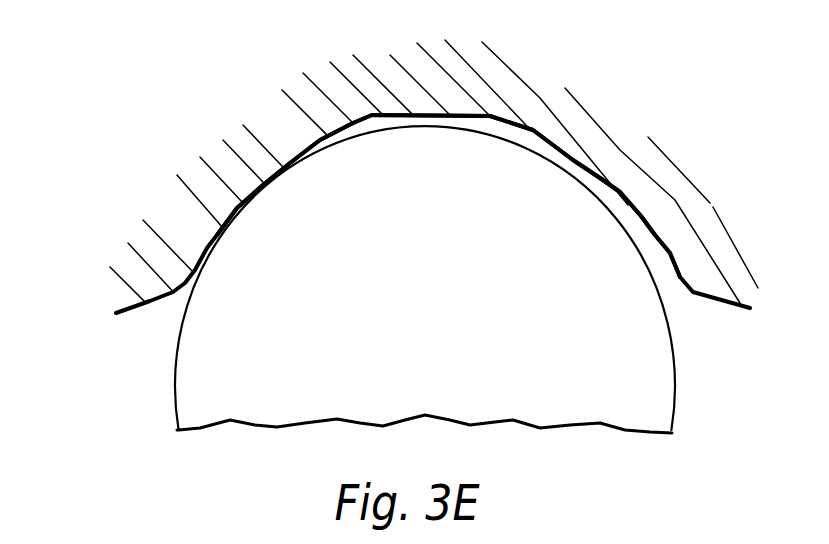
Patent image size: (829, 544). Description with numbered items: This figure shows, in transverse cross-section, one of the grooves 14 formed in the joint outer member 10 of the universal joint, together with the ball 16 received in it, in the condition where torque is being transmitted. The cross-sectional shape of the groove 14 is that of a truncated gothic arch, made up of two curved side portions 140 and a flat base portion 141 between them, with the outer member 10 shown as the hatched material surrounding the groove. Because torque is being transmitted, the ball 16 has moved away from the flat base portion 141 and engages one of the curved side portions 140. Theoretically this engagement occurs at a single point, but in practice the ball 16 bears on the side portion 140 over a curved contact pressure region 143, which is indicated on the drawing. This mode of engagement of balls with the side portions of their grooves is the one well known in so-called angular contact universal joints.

The joint outer member 10 is at (662, 175).
The groove 14 is at (650, 255).
The ball 16 is at (630, 397).
The curved side portions 140 is at (333, 148).
The flat base portion 141 is at (477, 118).
The curved contact pressure region 143 is at (303, 298).